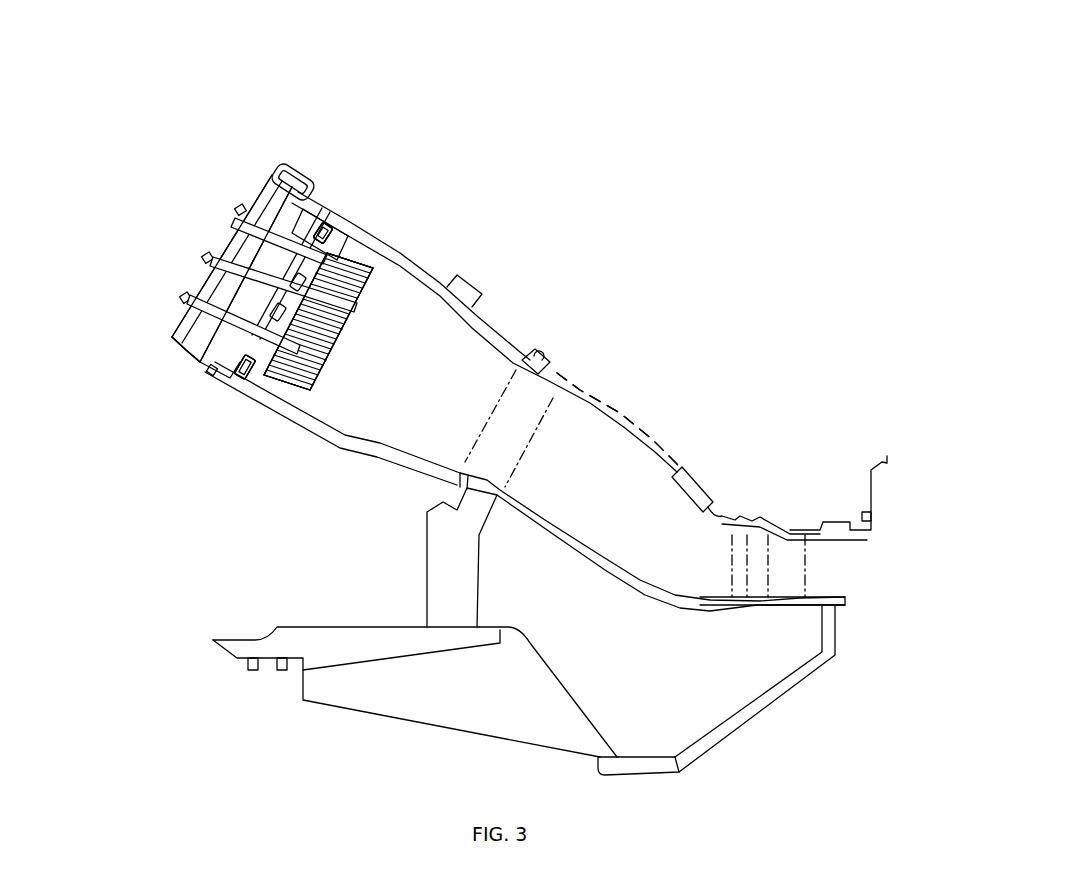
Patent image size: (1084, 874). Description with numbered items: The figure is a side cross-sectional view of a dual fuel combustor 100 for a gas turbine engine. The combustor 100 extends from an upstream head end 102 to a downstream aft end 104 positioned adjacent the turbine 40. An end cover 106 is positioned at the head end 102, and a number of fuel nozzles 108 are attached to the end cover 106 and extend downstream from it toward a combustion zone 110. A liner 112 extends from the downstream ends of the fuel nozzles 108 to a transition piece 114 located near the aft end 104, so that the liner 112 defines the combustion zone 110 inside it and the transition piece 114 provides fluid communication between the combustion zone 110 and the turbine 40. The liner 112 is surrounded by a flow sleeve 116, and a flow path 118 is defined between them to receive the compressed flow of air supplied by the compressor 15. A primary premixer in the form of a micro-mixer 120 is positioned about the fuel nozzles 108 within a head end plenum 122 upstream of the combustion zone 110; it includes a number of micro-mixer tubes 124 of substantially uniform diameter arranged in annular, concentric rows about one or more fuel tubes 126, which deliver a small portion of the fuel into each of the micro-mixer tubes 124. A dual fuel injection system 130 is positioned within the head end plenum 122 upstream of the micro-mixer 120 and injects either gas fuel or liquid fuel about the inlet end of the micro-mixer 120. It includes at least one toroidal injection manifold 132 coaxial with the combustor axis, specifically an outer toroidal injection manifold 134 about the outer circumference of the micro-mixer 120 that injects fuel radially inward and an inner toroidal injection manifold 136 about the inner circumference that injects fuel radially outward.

The dual fuel combustor 100 is at (306, 93).
The head end 102 is at (209, 204).
The aft end 104 is at (790, 492).
The end cover 106 is at (180, 323).
The fuel nozzles 108 is at (227, 348).
The combustion zone 110 is at (432, 378).
The liner 112 is at (477, 323).
The transition piece 114 is at (676, 478).
The flow sleeve 116 is at (638, 422).
The flow path 118 is at (588, 395).
The micro-mixer 120 is at (355, 251).
The head end plenum 122 is at (260, 380).
The micro-mixer tubes 124 is at (370, 312).
The fuel tubes 126 is at (338, 214).
The dual fuel injection system 130 is at (352, 223).
The toroidal injection manifold 132 is at (340, 238).
The outer toroidal injection manifold 134 is at (283, 300).
The inner toroidal injection manifold 136 is at (242, 363).
The turbine 40 is at (874, 507).
The compressor 15 is at (253, 640).